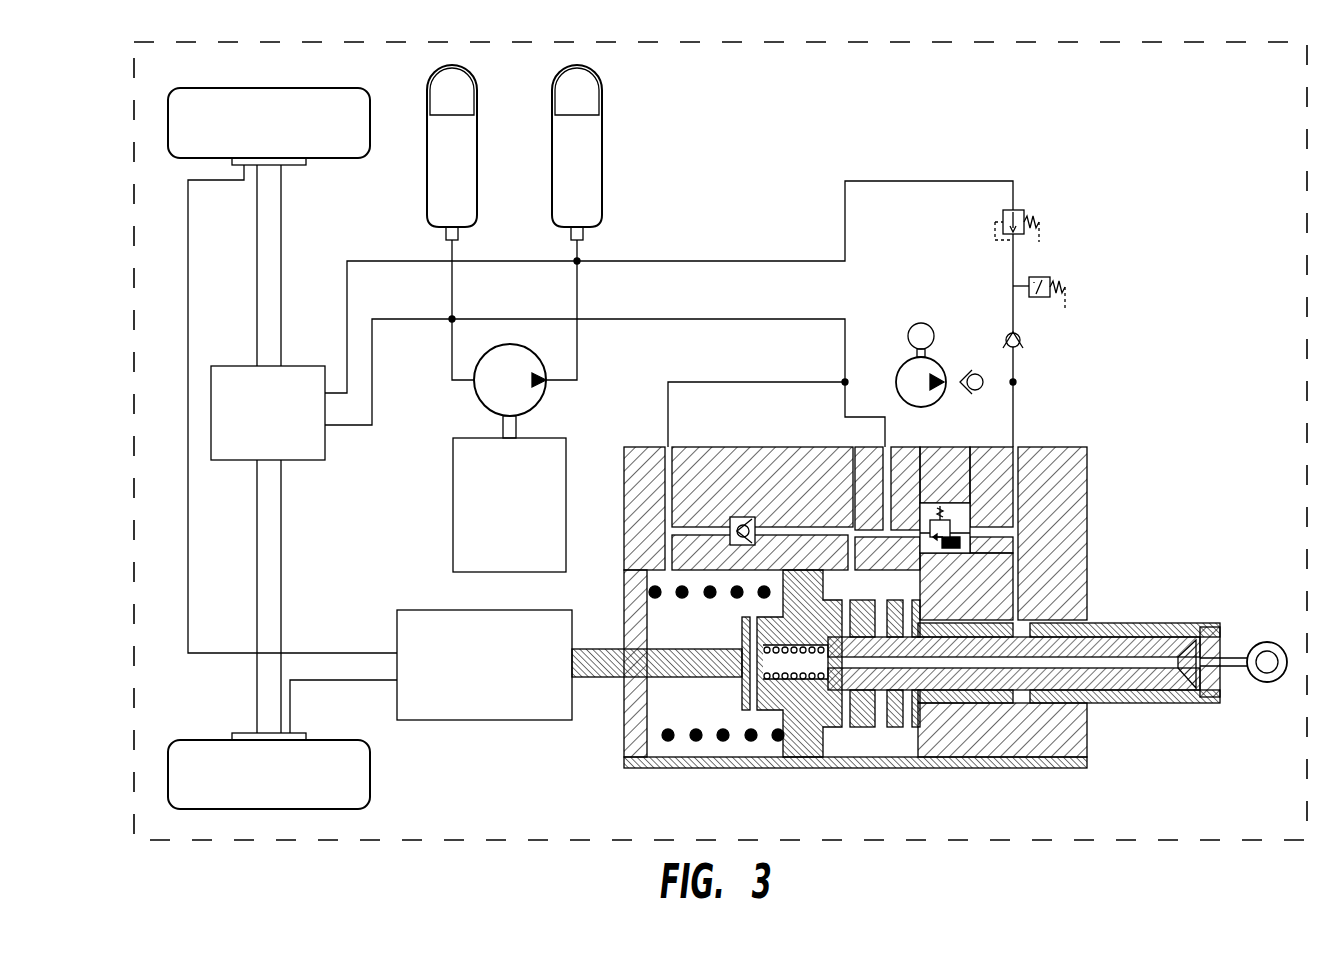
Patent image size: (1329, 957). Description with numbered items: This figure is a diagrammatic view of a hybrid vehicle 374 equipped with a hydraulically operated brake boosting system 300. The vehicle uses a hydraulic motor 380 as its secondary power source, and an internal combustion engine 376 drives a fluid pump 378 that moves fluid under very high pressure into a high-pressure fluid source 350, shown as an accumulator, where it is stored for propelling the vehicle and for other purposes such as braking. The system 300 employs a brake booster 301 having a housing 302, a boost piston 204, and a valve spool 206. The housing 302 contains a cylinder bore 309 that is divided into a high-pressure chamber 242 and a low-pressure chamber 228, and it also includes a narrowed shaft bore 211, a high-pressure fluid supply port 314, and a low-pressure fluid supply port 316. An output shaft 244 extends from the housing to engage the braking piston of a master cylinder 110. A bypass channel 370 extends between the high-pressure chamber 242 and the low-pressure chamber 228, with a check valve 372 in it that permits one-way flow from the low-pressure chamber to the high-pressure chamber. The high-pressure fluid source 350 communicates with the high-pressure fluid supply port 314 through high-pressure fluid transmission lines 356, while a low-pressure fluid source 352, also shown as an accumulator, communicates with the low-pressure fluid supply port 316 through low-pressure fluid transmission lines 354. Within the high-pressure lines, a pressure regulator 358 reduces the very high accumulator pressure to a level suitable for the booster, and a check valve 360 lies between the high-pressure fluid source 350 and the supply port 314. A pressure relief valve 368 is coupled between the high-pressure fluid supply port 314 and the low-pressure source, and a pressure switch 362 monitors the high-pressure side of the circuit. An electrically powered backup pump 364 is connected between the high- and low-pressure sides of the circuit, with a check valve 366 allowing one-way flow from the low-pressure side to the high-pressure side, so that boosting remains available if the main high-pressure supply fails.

The master cylinder 110 is at (528, 717).
The boost piston 204 is at (800, 743).
The valve spool 206 is at (1158, 680).
The shaft bore 211 is at (1087, 690).
The low-pressure chamber 228 is at (633, 775).
The high-pressure chamber 242 is at (858, 748).
The output shaft 244 is at (598, 680).
The hydraulically operated brake boosting system 300 is at (1183, 297).
The brake booster 301 is at (1140, 487).
The housing 302 is at (1075, 557).
The cylinder bore 309 is at (708, 752).
The high-pressure fluid supply port 314 is at (1015, 487).
The low-pressure fluid supply port 316 is at (667, 505).
The high-pressure fluid source 350 is at (583, 150).
The low-pressure fluid source 352 is at (458, 160).
The low-pressure fluid transmission lines 354 is at (732, 318).
The high-pressure fluid transmission lines 356 is at (797, 258).
The pressure regulator 358 is at (1022, 212).
The check valve 360 is at (1025, 340).
The pressure switch 362 is at (1050, 280).
The electrically powered backup pump 364 is at (908, 368).
The check valve 366 is at (975, 370).
The pressure relief valve 368 is at (958, 505).
The bypass channel 370 is at (822, 530).
The check valve 372 is at (738, 517).
The hybrid vehicle 374 is at (1307, 172).
The internal combustion engine 376 is at (455, 502).
The fluid pump 378 is at (493, 392).
The hydraulic motor 380 is at (300, 450).